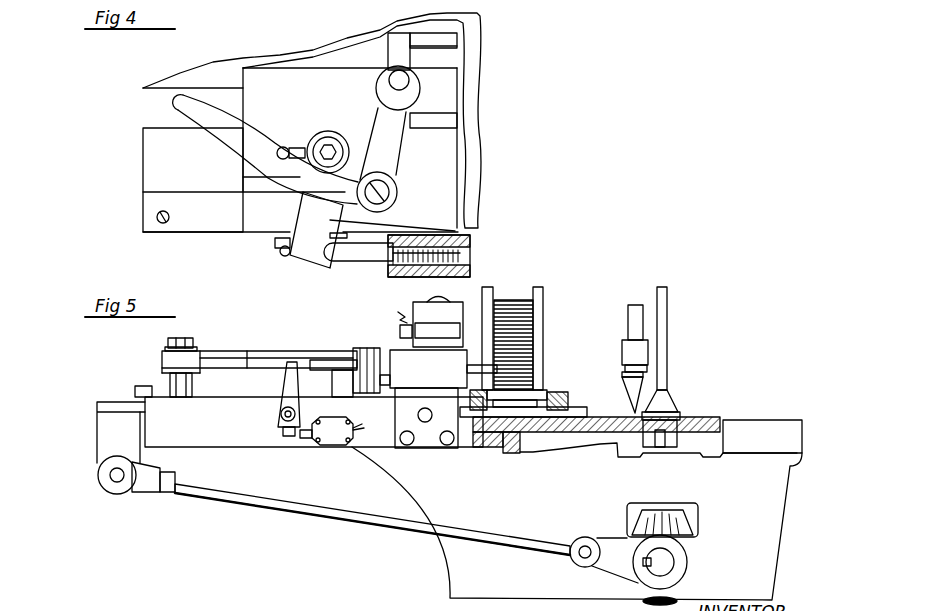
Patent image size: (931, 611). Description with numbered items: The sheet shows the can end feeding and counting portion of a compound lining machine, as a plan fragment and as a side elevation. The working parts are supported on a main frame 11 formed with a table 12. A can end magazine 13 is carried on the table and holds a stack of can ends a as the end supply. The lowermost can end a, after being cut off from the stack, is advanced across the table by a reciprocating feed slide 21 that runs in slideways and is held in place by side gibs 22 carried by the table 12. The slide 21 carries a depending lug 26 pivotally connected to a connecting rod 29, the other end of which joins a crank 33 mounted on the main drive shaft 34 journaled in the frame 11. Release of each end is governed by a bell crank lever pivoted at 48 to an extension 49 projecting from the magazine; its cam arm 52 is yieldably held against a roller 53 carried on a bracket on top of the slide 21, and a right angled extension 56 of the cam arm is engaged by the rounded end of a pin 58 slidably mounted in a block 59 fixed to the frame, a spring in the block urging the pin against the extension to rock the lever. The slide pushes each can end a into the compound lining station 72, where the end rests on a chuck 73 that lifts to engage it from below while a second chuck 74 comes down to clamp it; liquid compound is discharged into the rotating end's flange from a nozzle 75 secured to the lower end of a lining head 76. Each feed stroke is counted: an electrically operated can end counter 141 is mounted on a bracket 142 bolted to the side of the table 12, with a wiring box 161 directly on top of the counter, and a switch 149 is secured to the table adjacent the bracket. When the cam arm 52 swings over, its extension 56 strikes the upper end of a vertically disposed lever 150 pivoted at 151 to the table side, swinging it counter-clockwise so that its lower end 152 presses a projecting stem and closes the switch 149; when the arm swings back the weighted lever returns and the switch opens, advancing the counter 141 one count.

In FIG. 5, the main frame 11 is at (467, 567).
In FIG. 5, the table 12 is at (580, 370).
In FIG. 5, the can end magazine 13 is at (498, 297).
In FIG. 5, the feed slide 21 is at (108, 402).
In FIG. 4, the side gibs 22 is at (190, 232).
In FIG. 5, the side gibs 22 is at (181, 398).
In FIG. 5, the depending lug 26 is at (108, 440).
In FIG. 5, the connecting rod 29 is at (317, 502).
In FIG. 5, the crank 33 is at (610, 548).
In FIG. 5, the main drive shaft 34 is at (675, 562).
In FIG. 4, the pivot 48 is at (389, 179).
In FIG. 4, the extension 49 is at (429, 194).
In FIG. 5, the cam arm 52 is at (222, 357).
In FIG. 4, the roller 53 is at (328, 130).
In FIG. 5, the roller 53 is at (165, 347).
In FIG. 4, the right angled extension 56 is at (316, 230).
In FIG. 5, the right angled extension 56 is at (326, 363).
In FIG. 4, the pin 58 is at (352, 275).
In FIG. 4, the block 59 is at (472, 262).
In FIG. 5, the compound lining station 72 is at (680, 400).
In FIG. 5, the chuck 73 is at (672, 428).
In FIG. 5, the chuck 74 is at (670, 388).
In FIG. 5, the discharge nozzle 75 is at (630, 392).
In FIG. 5, the lining head 76 is at (628, 347).
In FIG. 5, the can end counter 141 is at (420, 346).
In FIG. 5, the bracket 142 is at (438, 399).
In FIG. 5, the switch 149 is at (332, 431).
In FIG. 4, the lever 150 is at (274, 244).
In FIG. 5, the lever 150 is at (285, 382).
In FIG. 4, the pivot 151 is at (284, 256).
In FIG. 5, the pivot 151 is at (280, 413).
In FIG. 5, the lower end 152 is at (285, 428).
In FIG. 5, the wiring box 161 is at (430, 312).
In FIG. 5, the can end a is at (510, 302).